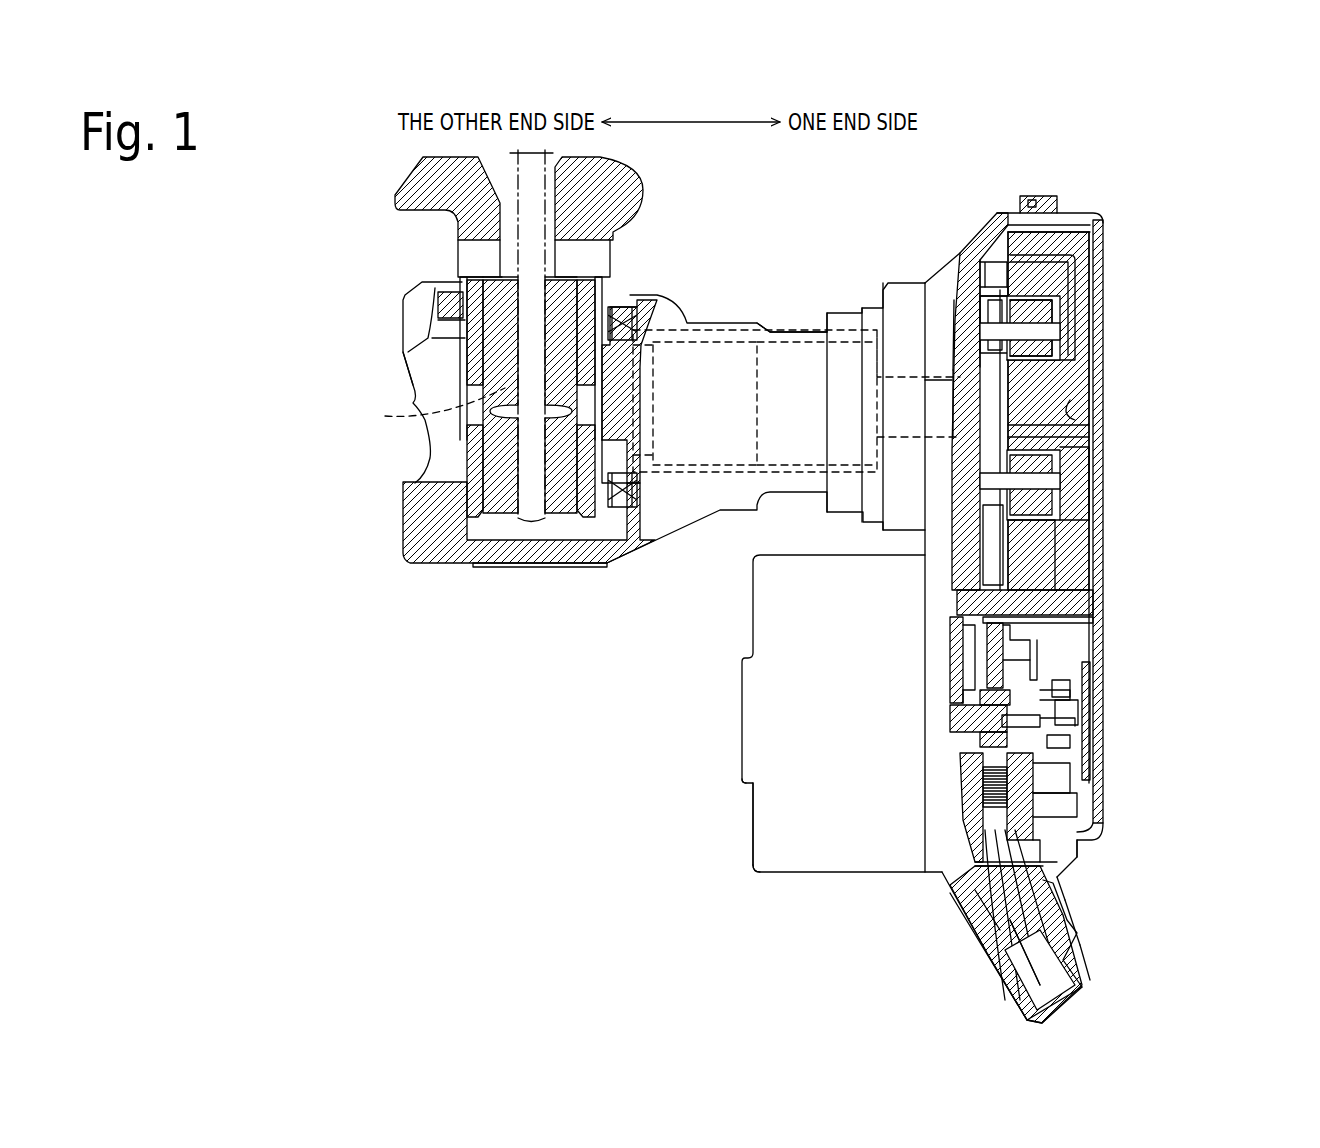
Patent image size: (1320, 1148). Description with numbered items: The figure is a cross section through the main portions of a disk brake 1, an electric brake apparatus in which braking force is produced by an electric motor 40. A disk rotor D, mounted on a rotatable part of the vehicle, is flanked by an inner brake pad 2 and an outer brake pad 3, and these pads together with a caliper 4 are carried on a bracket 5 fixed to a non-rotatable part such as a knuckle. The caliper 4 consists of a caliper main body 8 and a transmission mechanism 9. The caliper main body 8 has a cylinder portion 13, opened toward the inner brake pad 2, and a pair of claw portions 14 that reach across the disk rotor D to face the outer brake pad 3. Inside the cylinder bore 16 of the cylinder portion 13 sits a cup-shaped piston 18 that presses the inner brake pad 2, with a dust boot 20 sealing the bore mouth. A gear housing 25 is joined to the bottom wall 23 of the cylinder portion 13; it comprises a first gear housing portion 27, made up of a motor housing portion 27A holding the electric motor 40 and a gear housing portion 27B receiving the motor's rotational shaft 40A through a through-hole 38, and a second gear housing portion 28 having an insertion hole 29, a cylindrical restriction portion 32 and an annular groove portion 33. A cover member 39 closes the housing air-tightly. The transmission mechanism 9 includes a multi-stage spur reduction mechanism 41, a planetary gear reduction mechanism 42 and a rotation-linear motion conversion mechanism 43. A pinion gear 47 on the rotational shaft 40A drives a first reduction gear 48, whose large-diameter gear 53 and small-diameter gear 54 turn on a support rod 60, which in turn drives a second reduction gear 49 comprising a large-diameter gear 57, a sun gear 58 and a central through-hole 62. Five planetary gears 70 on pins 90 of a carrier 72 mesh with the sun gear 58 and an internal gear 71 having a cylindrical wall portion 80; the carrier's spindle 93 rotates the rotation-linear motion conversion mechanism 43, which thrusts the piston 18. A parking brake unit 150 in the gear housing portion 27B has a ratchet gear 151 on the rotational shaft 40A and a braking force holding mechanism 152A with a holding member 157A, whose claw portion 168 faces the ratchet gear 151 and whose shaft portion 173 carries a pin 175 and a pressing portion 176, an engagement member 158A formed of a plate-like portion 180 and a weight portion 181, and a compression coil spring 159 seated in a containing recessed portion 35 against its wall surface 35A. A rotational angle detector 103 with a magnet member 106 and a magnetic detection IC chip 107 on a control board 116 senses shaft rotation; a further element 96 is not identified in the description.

The disk brake 1 is at (1128, 228).
The inner brake pad 2 is at (565, 513).
The outer brake pad 3 is at (497, 515).
The caliper 4 is at (610, 575).
The bracket 5 is at (418, 178).
The caliper main body 8 is at (707, 328).
The transmission mechanism 9 is at (1080, 460).
The cylinder portion 13 is at (790, 332).
The claw portion 14 is at (413, 322).
The cylinder bore 16 is at (713, 512).
The piston 18 is at (695, 340).
The dust boot 20 is at (620, 305).
The bottom wall 23 is at (935, 370).
The gear housing 25 is at (751, 877).
The first gear housing portion 27 is at (749, 818).
The motor housing portion 27A is at (749, 843).
The gear housing portion 27B is at (1073, 997).
The second gear housing portion 28 is at (967, 277).
The insertion hole 29 is at (960, 388).
The cylindrical restriction portion 32 is at (1010, 298).
The annular groove portion 33 is at (982, 270).
The containing recessed portion 35 is at (1000, 907).
The wall surface 35A is at (967, 745).
The through-hole 38 is at (945, 688).
The cover member 39 is at (1107, 690).
The electric motor 40 is at (805, 845).
The rotational shaft 40A is at (955, 715).
The multi-stage spur reduction mechanism 41 is at (1100, 652).
The planetary gear reduction mechanism 42 is at (1050, 315).
The rotation-linear motion conversion mechanism 43 is at (672, 455).
The pinion gear 47 is at (967, 725).
The first reduction gear 48 is at (1005, 658).
The second reduction gear 49 is at (1077, 437).
The large-diameter gear 53 is at (1100, 737).
The small-diameter gear 54 is at (1070, 621).
The large-diameter gear 57 is at (1080, 228).
The sun gear 58 is at (1055, 335).
The support rod 60 is at (1087, 603).
The through-hole 62 is at (1040, 400).
The planetary gear 70 is at (1033, 307).
The internal gear 71 is at (1060, 537).
The carrier 72 is at (1013, 307).
The cylindrical wall portion 80 is at (997, 267).
The pin 90 is at (1055, 483).
The spindle 93 is at (958, 413).
The flange portion 96 is at (945, 360).
The rotational angle detector 103 is at (1047, 775).
The magnet member 106 is at (1063, 762).
The magnetic detection IC chip 107 is at (1043, 740).
The control board 116 is at (1043, 695).
The parking brake unit 150 is at (1045, 855).
The ratchet gear 151 is at (1067, 800).
The braking force holding mechanism 152A is at (1062, 897).
The holding member 157A is at (1085, 982).
The engagement member 158A is at (1080, 807).
The compression coil spring 159 is at (980, 897).
The claw portion 168 is at (970, 873).
The shaft portion 173 is at (1073, 950).
The pin 175 is at (1040, 863).
The pressing portion 176 is at (1020, 920).
The plate-like portion 180 is at (1073, 917).
The weight portion 181 is at (1070, 817).
The disk rotor D is at (431, 391).